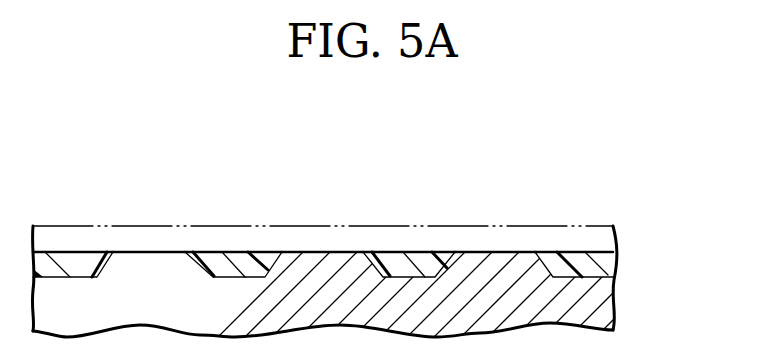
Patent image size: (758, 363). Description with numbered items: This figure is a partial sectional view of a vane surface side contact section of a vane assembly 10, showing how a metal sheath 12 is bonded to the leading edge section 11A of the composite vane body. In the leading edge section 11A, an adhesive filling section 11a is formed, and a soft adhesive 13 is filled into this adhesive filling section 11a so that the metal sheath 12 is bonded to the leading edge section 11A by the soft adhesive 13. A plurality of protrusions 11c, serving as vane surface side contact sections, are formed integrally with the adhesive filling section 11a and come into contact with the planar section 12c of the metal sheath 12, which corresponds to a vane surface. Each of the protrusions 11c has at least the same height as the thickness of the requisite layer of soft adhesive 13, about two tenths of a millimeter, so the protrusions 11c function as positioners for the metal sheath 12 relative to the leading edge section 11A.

The semiconductor device 10 is at (437, 170).
The leading edge section 11A is at (603, 300).
The adhesive filling section 11a is at (235, 272).
The protrusions 11c is at (150, 264).
The metal sheath 12 is at (378, 232).
The planar section 12c is at (196, 240).
The soft adhesive 13 is at (67, 262).